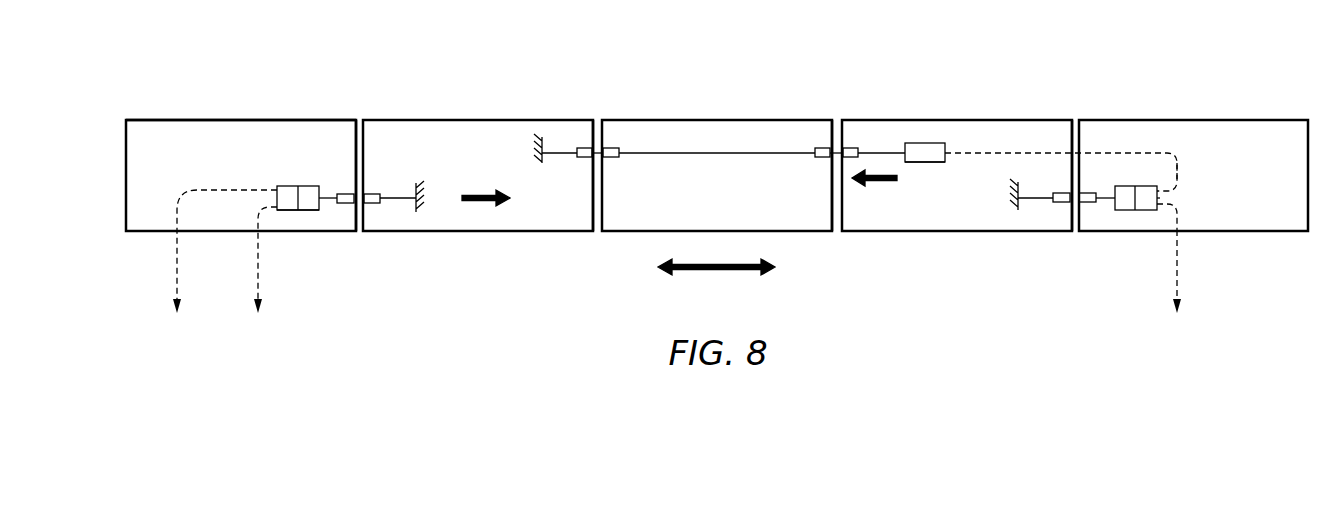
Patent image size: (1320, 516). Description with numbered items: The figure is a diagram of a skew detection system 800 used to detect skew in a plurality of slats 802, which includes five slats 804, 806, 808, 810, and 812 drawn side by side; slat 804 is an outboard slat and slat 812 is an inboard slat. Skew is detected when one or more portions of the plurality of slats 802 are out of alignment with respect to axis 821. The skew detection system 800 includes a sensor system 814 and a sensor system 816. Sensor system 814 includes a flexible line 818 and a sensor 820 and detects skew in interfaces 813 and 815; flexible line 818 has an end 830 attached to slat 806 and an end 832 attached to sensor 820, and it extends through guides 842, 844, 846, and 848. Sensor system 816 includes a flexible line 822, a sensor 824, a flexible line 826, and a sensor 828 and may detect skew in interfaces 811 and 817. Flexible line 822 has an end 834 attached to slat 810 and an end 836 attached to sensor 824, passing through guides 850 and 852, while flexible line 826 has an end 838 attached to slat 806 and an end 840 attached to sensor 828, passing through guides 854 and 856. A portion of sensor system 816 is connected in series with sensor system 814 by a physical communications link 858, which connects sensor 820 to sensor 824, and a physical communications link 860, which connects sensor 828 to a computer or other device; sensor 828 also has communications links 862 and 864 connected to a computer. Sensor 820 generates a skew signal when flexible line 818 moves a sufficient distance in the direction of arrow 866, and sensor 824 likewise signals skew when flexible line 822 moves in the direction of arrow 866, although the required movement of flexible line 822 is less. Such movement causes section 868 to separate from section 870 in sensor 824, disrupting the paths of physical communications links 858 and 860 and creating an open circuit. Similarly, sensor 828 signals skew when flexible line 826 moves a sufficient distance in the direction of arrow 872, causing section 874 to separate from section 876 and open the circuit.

The skew detection system 800 is at (508, 56).
The plurality of slats 802 is at (175, 113).
The slat 804 is at (240, 120).
The slat 806 is at (478, 120).
The slat 808 is at (716, 120).
The slat 810 is at (1000, 120).
The slat 812 is at (1195, 120).
The interface 811 is at (358, 234).
The interface 813 is at (594, 234).
The interface 815 is at (846, 234).
The interface 817 is at (1076, 234).
The sensor system 814 is at (934, 166).
The sensor system 816 is at (1187, 193).
The flexible line 818 is at (680, 154).
The sensor 820 is at (925, 143).
The axis 821 is at (716, 271).
The flexible line 822 is at (1035, 199).
The sensor 824 is at (1161, 206).
The flexible line 826 is at (397, 199).
The sensor 828 is at (289, 186).
The end 830 is at (545, 164).
The end 832 is at (888, 152).
The end 834 is at (1019, 212).
The end 836 is at (1105, 199).
The end 838 is at (418, 213).
The end 840 is at (328, 197).
The guide 842 is at (581, 148).
The guide 844 is at (612, 148).
The guide 846 is at (820, 148).
The guide 848 is at (851, 148).
The guide 850 is at (1062, 193).
The guide 852 is at (1088, 203).
The guide 854 is at (345, 204).
The guide 856 is at (378, 194).
The physical communications link 858 is at (1123, 153).
The physical communications link 860 is at (1180, 276).
The communications link 862 is at (202, 189).
The communications link 864 is at (256, 272).
The arrow 866 is at (882, 183).
The section 868 is at (1130, 211).
The section 870 is at (1181, 172).
The arrow 872 is at (478, 193).
The section 874 is at (292, 211).
The section 876 is at (305, 186).